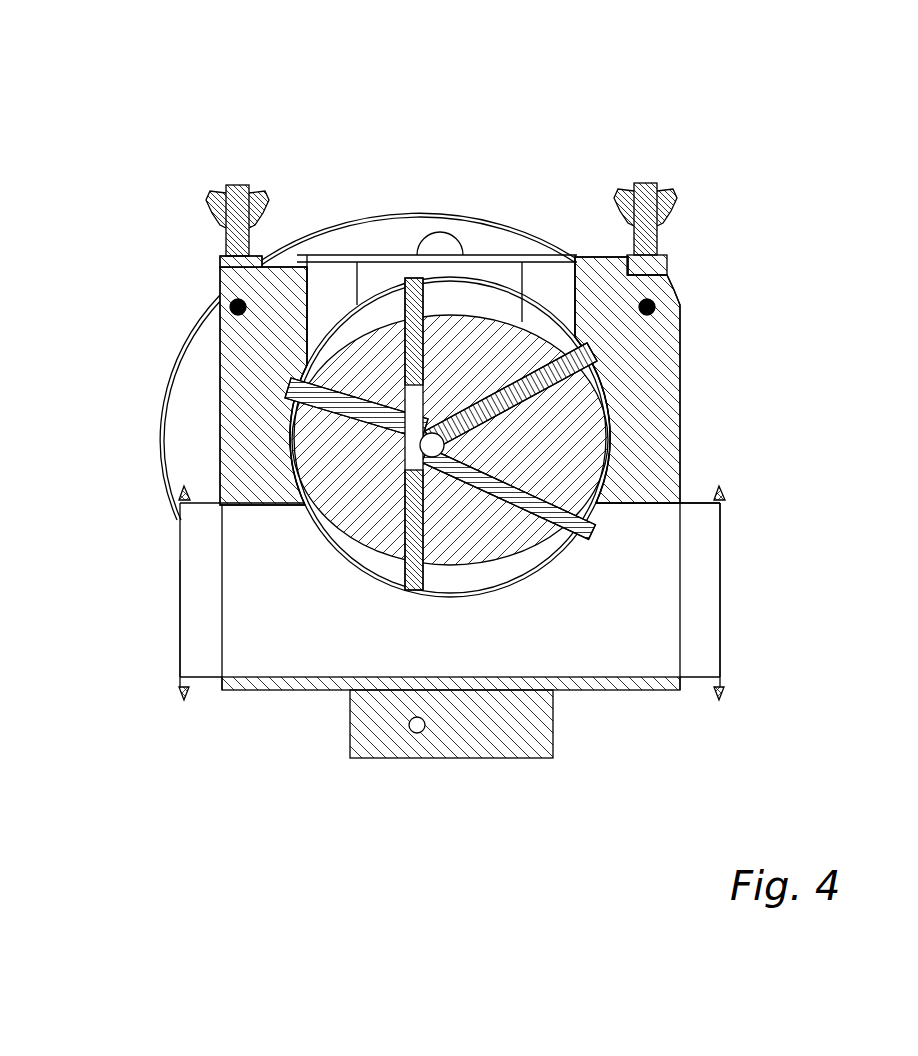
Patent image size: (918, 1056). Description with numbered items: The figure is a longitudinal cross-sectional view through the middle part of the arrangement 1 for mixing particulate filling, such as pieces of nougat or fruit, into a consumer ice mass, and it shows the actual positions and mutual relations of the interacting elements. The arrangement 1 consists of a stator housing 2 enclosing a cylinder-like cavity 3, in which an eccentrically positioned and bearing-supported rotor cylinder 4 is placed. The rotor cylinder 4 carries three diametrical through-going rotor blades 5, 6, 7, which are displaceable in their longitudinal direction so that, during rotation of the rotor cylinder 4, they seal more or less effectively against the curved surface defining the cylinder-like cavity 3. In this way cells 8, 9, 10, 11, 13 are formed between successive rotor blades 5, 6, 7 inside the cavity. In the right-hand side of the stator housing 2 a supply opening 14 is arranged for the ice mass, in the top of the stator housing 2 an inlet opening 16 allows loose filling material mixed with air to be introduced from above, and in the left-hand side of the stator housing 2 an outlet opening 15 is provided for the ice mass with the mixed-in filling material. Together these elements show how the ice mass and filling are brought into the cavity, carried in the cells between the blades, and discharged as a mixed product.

The arrangement 1 is at (147, 102).
The stator housing 2 is at (217, 332).
The cylinder-like cavity 3 is at (675, 483).
The rotor cylinder 4 is at (605, 440).
The rotor blade 5 is at (655, 378).
The rotor blade 6 is at (400, 262).
The rotor blade 7 is at (220, 417).
The cell 8 is at (523, 262).
The cell 9 is at (565, 470).
The cell 10 is at (527, 547).
The cell 11 is at (345, 550).
The cell 13 is at (365, 312).
The supply opening 14 is at (695, 590).
The outlet opening 15 is at (193, 602).
The inlet opening 16 is at (500, 262).